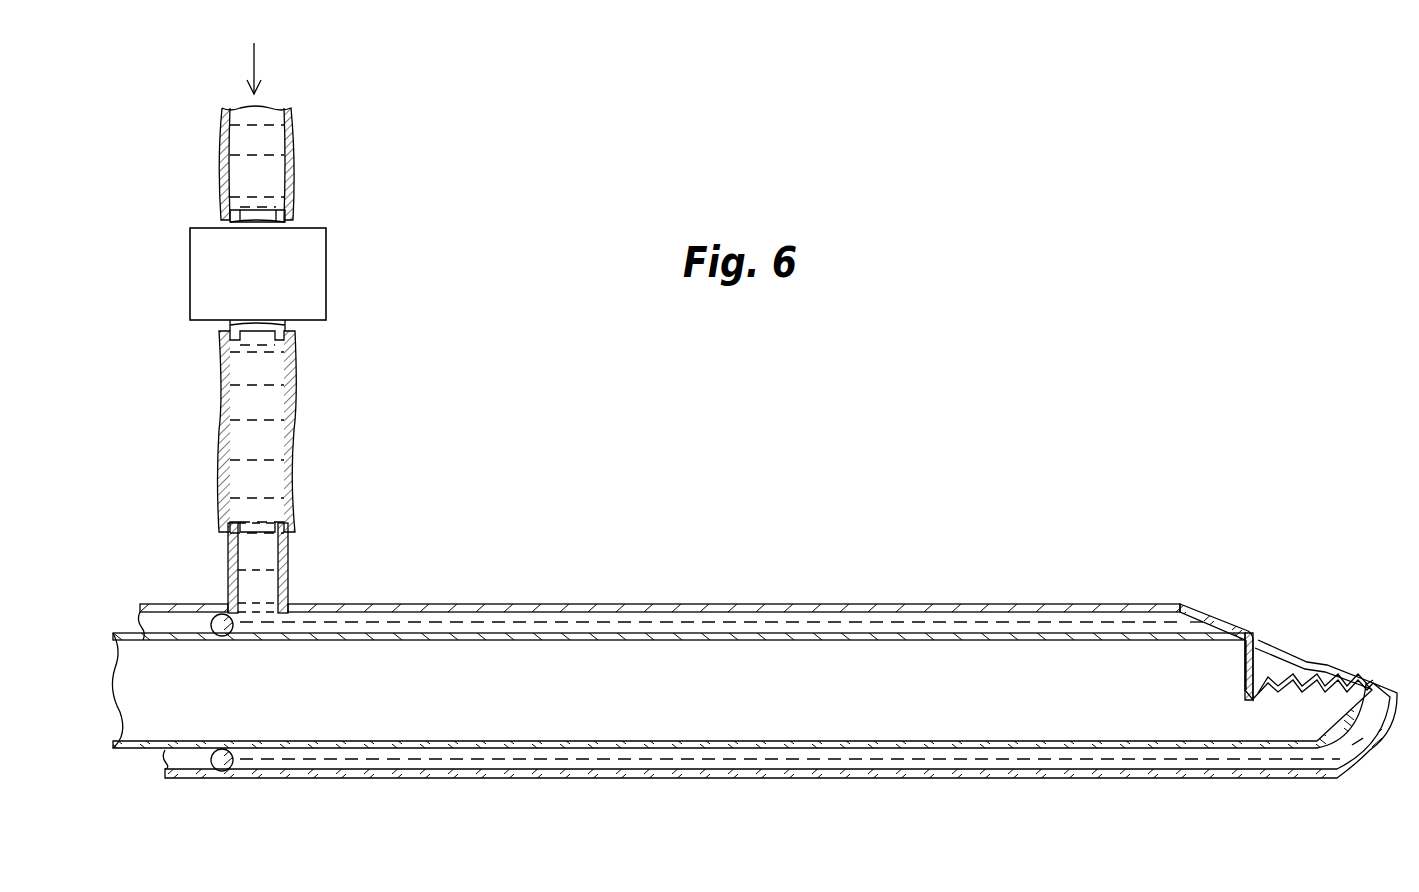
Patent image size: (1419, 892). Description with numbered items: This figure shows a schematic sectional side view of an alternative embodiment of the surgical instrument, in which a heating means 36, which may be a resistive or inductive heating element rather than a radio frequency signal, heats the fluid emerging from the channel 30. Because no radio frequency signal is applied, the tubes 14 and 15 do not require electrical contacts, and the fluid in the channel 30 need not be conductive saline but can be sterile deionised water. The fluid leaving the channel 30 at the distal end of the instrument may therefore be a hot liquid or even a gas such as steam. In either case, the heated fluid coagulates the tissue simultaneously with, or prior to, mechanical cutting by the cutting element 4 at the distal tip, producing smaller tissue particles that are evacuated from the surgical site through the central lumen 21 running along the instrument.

The heating means 36 is at (313, 275).
The channel 30 is at (665, 617).
The tube 15 is at (1097, 603).
The tube 14 is at (920, 630).
The central lumen 21 is at (807, 652).
The cutting element 4 is at (1270, 683).